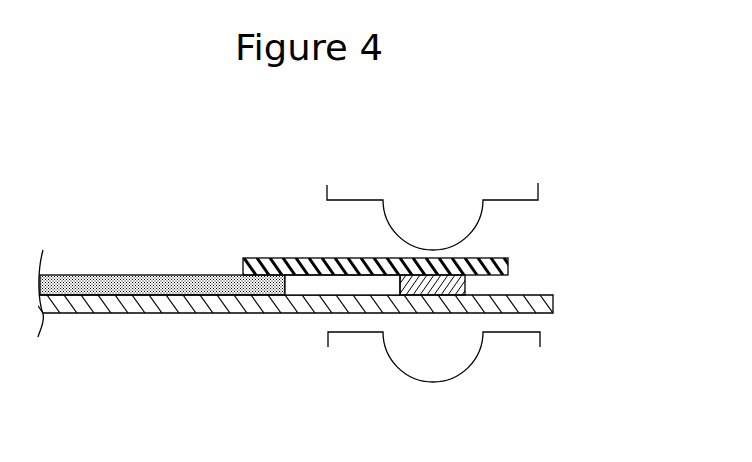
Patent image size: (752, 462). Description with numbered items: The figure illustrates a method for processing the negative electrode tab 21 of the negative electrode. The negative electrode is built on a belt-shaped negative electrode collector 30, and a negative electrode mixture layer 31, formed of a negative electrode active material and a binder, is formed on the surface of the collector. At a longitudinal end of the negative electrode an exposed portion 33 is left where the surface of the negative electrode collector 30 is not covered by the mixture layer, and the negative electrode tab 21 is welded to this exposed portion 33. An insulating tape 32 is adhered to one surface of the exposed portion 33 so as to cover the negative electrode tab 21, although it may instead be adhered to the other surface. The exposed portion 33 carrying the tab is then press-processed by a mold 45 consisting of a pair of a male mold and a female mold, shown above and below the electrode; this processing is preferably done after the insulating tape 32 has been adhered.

The negative electrode tab 21 is at (465, 286).
The negative electrode collector 30 is at (197, 313).
The negative electrode mixture layer 31 is at (150, 285).
The insulating tape 32 is at (257, 262).
The exposed portion 33 is at (304, 292).
The mold 45 is at (477, 225).